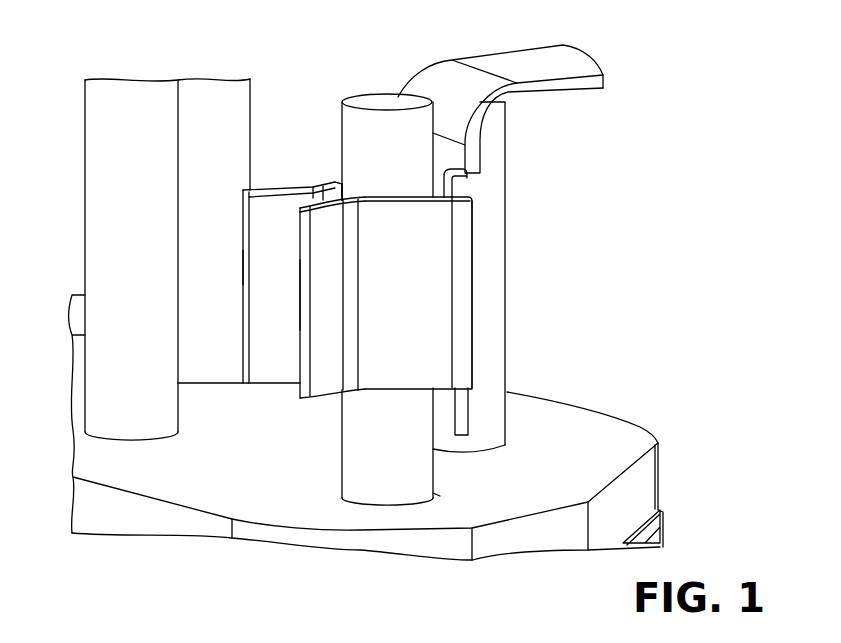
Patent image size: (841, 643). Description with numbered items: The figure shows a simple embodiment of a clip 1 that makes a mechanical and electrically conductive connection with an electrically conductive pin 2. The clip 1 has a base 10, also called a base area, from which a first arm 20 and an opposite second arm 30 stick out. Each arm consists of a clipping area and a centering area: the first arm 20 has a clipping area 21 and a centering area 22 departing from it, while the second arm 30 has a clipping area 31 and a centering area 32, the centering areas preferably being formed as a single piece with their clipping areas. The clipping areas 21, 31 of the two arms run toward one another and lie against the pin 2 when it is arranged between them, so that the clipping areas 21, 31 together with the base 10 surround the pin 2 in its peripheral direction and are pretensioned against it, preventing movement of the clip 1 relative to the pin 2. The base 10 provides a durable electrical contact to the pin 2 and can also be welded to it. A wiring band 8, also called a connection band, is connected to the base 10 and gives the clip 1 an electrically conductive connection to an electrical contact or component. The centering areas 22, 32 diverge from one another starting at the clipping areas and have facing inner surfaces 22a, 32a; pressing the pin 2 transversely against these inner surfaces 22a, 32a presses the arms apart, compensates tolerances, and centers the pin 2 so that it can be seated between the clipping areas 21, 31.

The clip 1 is at (474, 271).
The pin 2 is at (372, 101).
The wiring band 8 is at (428, 76).
The base 10 is at (460, 402).
The first arm 20 is at (376, 327).
The clipping area 21 is at (422, 319).
The centering area 22 is at (327, 380).
The inner surface 22a is at (306, 300).
The second arm 30 is at (243, 233).
The clipping area 31 is at (333, 182).
The centering area 32 is at (277, 198).
The inner surface 32a is at (277, 260).